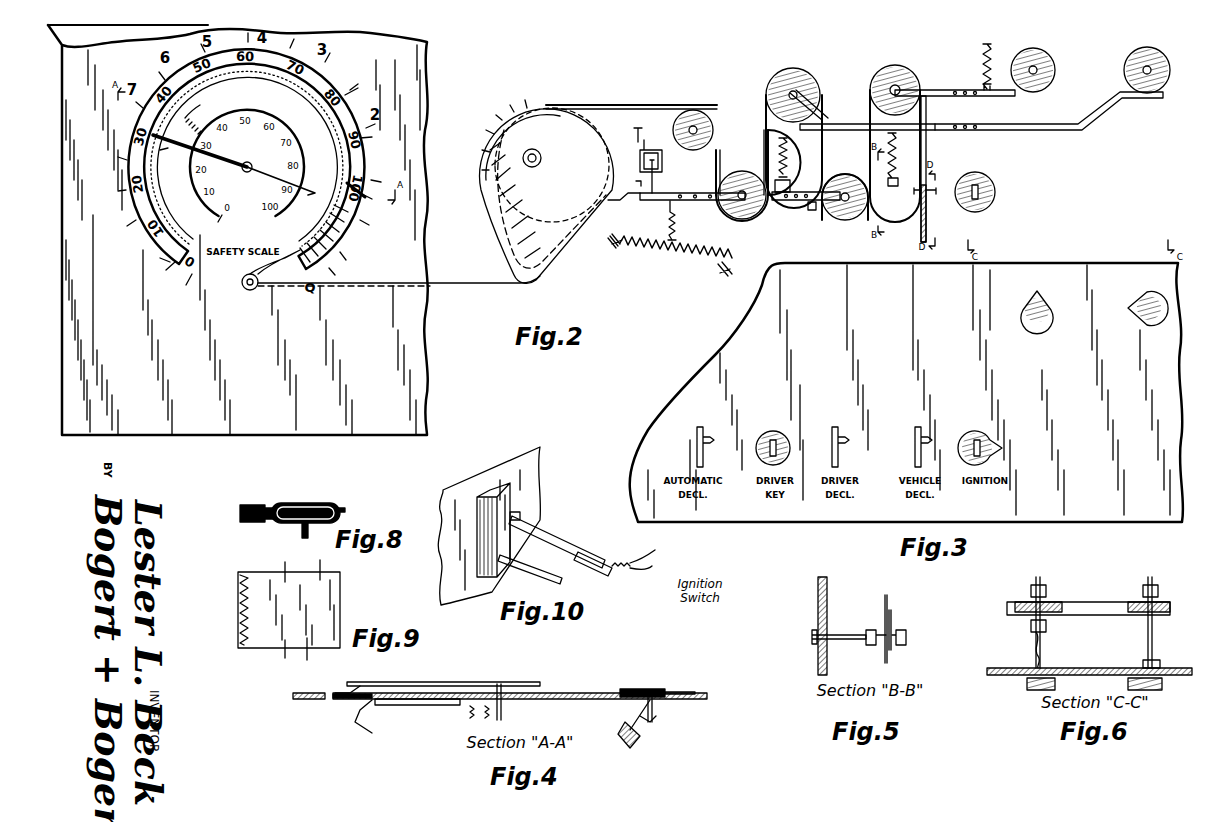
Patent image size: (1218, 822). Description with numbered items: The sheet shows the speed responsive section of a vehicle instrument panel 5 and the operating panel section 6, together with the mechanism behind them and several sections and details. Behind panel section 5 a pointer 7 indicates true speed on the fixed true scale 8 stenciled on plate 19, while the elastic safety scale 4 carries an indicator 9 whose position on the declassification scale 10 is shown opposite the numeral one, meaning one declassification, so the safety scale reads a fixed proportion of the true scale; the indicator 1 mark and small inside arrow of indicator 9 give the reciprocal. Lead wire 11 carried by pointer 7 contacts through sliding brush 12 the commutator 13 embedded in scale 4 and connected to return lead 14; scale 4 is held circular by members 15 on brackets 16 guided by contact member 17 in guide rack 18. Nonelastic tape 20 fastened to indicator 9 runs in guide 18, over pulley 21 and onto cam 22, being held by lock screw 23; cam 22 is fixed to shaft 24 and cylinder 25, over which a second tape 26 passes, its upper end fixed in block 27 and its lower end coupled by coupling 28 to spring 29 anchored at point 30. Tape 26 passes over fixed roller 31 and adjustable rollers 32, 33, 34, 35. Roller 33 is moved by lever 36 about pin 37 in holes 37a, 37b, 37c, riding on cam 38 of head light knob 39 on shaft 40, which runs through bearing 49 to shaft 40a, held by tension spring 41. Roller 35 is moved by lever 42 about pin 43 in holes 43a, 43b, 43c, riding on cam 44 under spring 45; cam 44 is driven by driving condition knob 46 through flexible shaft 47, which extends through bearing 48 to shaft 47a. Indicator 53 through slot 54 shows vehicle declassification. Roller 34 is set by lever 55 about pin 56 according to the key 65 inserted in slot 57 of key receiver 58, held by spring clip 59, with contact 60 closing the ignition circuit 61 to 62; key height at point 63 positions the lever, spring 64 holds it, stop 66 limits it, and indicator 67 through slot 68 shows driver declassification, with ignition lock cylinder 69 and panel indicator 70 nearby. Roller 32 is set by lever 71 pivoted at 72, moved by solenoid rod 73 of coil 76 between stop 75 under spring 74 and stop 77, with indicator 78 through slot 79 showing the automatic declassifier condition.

In FIG. 2, the safety scale pointer 1 is at (384, 204).
In FIG. 2, the safety scale 4 is at (176, 262).
In FIG. 8, the safety scale 4 is at (262, 524).
In FIG. 9, the safety scale 4 is at (300, 568).
In FIG. 4, the safety scale 4 is at (348, 700).
In FIG. 2, the vehicle instrument panel section 5 is at (440, 350).
In FIG. 3, the vehicle instrument panel section 6 is at (708, 360).
In FIG. 5, the vehicle instrument panel section 6 is at (808, 582).
In FIG. 6, the vehicle instrument panel section 6 is at (1010, 660).
In FIG. 2, the pointer 7 is at (248, 183).
In FIG. 4, the pointer 7 is at (360, 680).
In FIG. 2, the true scale 8 is at (222, 225).
In FIG. 2, the indicator 9 is at (368, 190).
In FIG. 2, the declassification scale 10 is at (152, 65).
In FIG. 2, the electrical lead wire 11 is at (256, 134).
In FIG. 4, the electrical lead wire 11 is at (490, 720).
In FIG. 2, the sliding brush 12 is at (172, 148).
In FIG. 4, the sliding brush 12 is at (345, 684).
In FIG. 2, the commutator 13 is at (194, 119).
In FIG. 8, the commutator 13 is at (252, 503).
In FIG. 9, the commutator 13 is at (250, 650).
In FIG. 2, the return lead 14 is at (228, 104).
In FIG. 4, the return lead 14 is at (428, 707).
In FIG. 2, the members 15 is at (271, 173).
In FIG. 8, the members 15 is at (314, 500).
In FIG. 4, the members 15 is at (655, 688).
In FIG. 8, the brackets 16 is at (310, 530).
In FIG. 4, the brackets 16 is at (660, 722).
In FIG. 4, the contact member 17 is at (640, 742).
In FIG. 4, the guide rack 18 is at (360, 726).
In FIG. 4, the plate 19 is at (570, 690).
In FIG. 2, the nonelastic tape 20 is at (462, 288).
In FIG. 4, the nonelastic tape 20 is at (645, 730).
In FIG. 2, the pulley 21 is at (244, 292).
In FIG. 2, the cam 22 is at (565, 270).
In FIG. 2, the lock screw 23 is at (476, 183).
In FIG. 2, the shaft 24 is at (541, 158).
In FIG. 2, the cylinder 25 is at (575, 208).
In FIG. 2, the nonelastic tape 26 is at (620, 100).
In FIG. 5, the nonelastic tape 26 is at (888, 600).
In FIG. 2, the block 27 is at (928, 215).
In FIG. 2, the coupling 28 is at (612, 252).
In FIG. 2, the spring 29 is at (665, 262).
In FIG. 2, the fixed point 30 is at (735, 254).
In FIG. 2, the fixed-axis roller 31 is at (672, 123).
In FIG. 2, the adjustable position roller 32 is at (733, 160).
In FIG. 2, the adjustable position roller 33 is at (800, 125).
In FIG. 2, the adjustable position roller 34 is at (840, 172).
In FIG. 5, the adjustable position roller 34 is at (892, 615).
In FIG. 2, the adjustable position roller 35 is at (915, 105).
In FIG. 2, the lever 36 is at (1065, 132).
In FIG. 6, the lever 36 is at (1085, 600).
In FIG. 2, the pin 37 is at (965, 132).
In FIG. 2, the hole 37a is at (958, 118).
In FIG. 2, the hole 37b is at (965, 124).
In FIG. 2, the hole 37c is at (978, 130).
In FIG. 2, the cam 38 is at (1122, 62).
In FIG. 6, the cam 38 is at (1130, 598).
In FIG. 3, the head light control knob 39 is at (1130, 292).
In FIG. 6, the head light control knob 39 is at (1163, 688).
In FIG. 2, the light switch shaft 40 is at (1130, 50).
In FIG. 6, the light switch shaft 40 is at (1154, 640).
In FIG. 6, the shaft 40a is at (1150, 577).
In FIG. 2, the tension spring 41 is at (898, 150).
In FIG. 2, the lever 42 is at (928, 86).
In FIG. 6, the lever 42 is at (1010, 618).
In FIG. 2, the pin 43 is at (975, 100).
In FIG. 2, the hole 43a is at (955, 90).
In FIG. 2, the hole 43b is at (965, 90).
In FIG. 2, the hole 43c is at (975, 90).
In FIG. 2, the cam 44 is at (1052, 55).
In FIG. 6, the cam 44 is at (1050, 600).
In FIG. 2, the tension spring 45 is at (995, 58).
In FIG. 3, the driving condition control knob 46 is at (1048, 300).
In FIG. 6, the driving condition control knob 46 is at (1025, 684).
In FIG. 6, the flexible shaft 47 is at (1042, 645).
In FIG. 6, the shaft 47a is at (1038, 577).
In FIG. 6, the bearing 48 is at (1030, 590).
In FIG. 6, the bearing 49 is at (1160, 590).
In FIG. 2, the indicator 53 is at (918, 197).
In FIG. 3, the indicator 53 is at (928, 432).
In FIG. 3, the slot 54 is at (915, 440).
In FIG. 2, the lever 55 is at (802, 202).
In FIG. 10, the lever 55 is at (530, 576).
In FIG. 5, the lever 55 is at (870, 647).
In FIG. 2, the pin 56 is at (780, 202).
In FIG. 3, the slot 57 is at (785, 434).
In FIG. 10, the slot 57 is at (485, 590).
In FIG. 3, the key receiver 58 is at (760, 440).
In FIG. 10, the key receiver 58 is at (546, 470).
In FIG. 10, the spring clip 59 is at (540, 510).
In FIG. 10, the contact 60 is at (590, 578).
In FIG. 10, the ignition circuit lead 61 is at (641, 553).
In FIG. 10, the ignition circuit lead 62 is at (648, 568).
In FIG. 10, the key height point 63 is at (575, 542).
In FIG. 2, the spring 64 is at (792, 150).
In FIG. 2, the key 65 is at (766, 160).
In FIG. 2, the stop 66 is at (814, 212).
In FIG. 2, the indicator 67 is at (848, 222).
In FIG. 3, the indicator 67 is at (845, 432).
In FIG. 5, the indicator 67 is at (848, 632).
In FIG. 3, the slot 68 is at (832, 442).
In FIG. 2, the ignition lock cylinder 69 is at (992, 204).
In FIG. 2, the panel indicator 70 is at (718, 204).
In FIG. 3, the panel indicator 70 is at (990, 436).
In FIG. 2, the lever 71 is at (705, 205).
In FIG. 2, the pivot 72 is at (700, 180).
In FIG. 2, the solenoid rod 73 is at (660, 180).
In FIG. 2, the spring 74 is at (665, 232).
In FIG. 2, the stop 75 is at (630, 206).
In FIG. 2, the coil 76 is at (660, 135).
In FIG. 2, the stop 77 is at (634, 183).
In FIG. 3, the indicator 78 is at (708, 433).
In FIG. 3, the slot 79 is at (697, 432).